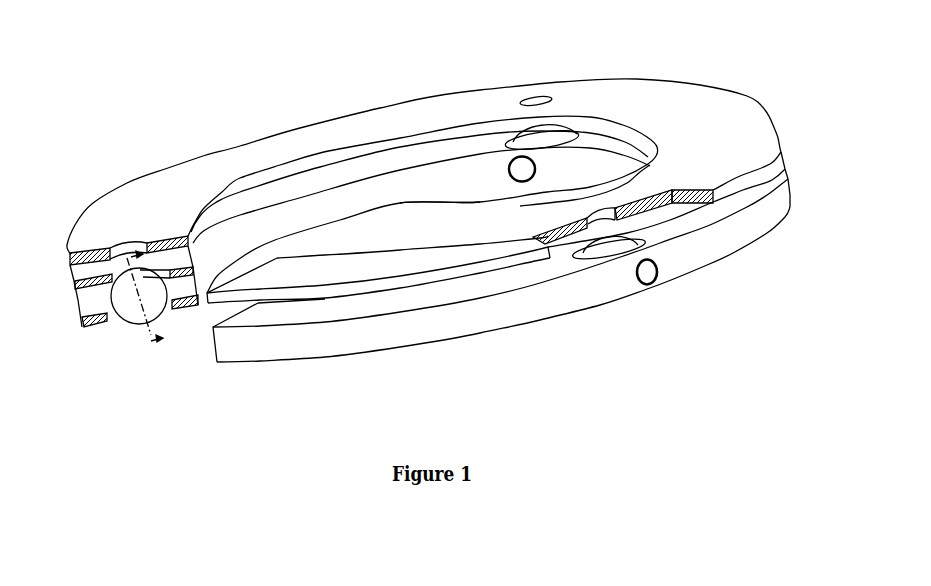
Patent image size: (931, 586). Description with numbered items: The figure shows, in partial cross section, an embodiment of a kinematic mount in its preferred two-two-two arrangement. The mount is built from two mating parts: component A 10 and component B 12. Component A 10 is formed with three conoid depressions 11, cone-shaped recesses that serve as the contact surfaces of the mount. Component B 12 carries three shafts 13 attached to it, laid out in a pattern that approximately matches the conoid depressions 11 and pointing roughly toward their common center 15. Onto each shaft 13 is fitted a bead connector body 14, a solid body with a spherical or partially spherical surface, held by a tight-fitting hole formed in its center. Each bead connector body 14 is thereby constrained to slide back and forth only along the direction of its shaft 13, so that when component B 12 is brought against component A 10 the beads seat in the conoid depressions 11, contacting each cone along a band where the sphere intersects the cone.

The component A 10 is at (687, 95).
The conoid depressions 11 is at (118, 243).
The component B 12 is at (435, 343).
The shafts 13 is at (99, 315).
The bead connector body 14 is at (157, 290).
The common center 15 is at (425, 218).